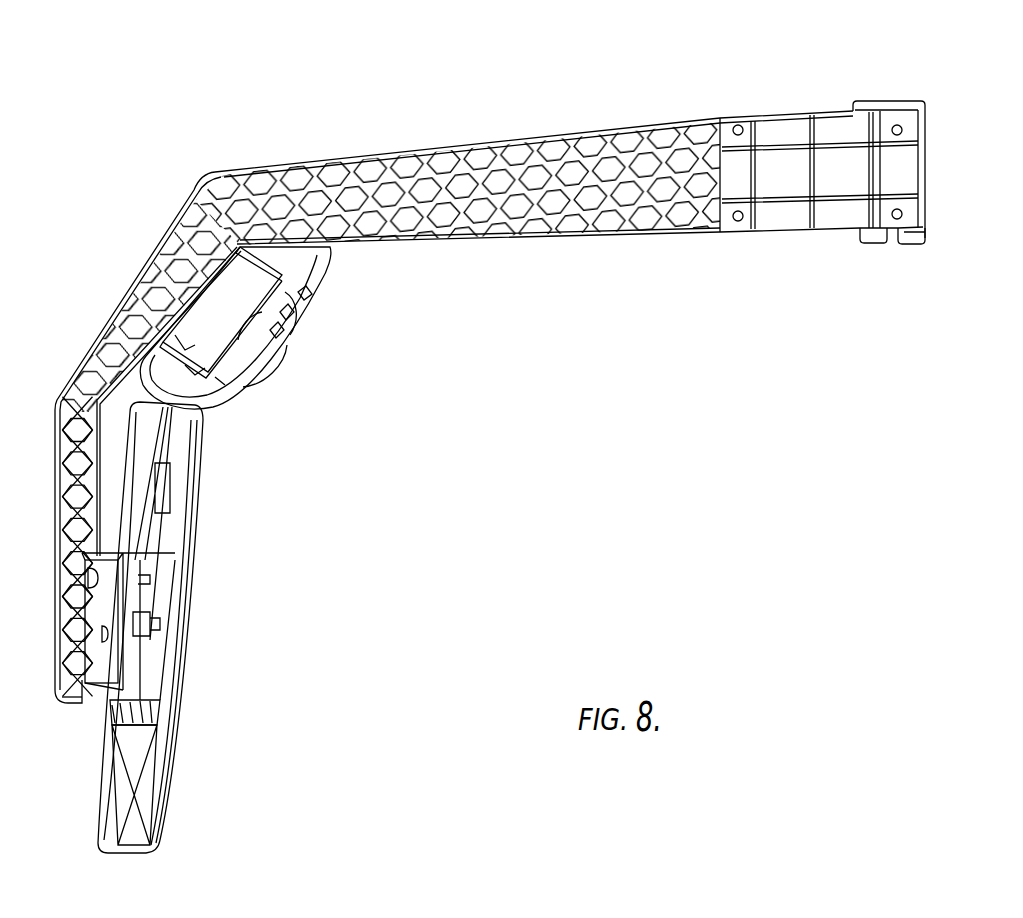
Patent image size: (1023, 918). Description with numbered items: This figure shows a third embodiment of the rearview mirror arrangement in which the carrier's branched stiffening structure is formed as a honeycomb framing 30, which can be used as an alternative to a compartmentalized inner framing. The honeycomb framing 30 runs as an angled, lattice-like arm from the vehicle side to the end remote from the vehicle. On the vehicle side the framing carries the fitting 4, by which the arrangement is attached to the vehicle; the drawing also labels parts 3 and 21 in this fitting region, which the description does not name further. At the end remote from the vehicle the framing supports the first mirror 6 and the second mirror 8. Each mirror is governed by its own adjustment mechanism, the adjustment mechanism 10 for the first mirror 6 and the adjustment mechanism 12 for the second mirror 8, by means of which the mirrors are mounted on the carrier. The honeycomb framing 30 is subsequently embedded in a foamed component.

The mounting tab 3 is at (918, 244).
The fitting 4 is at (855, 237).
The first mirror 6 is at (197, 508).
The second mirror 8 is at (318, 284).
The adjustment mechanism 10 is at (147, 683).
The adjustment mechanism 12 is at (221, 312).
The mounting holes 21 is at (741, 125).
The honeycomb framing 30 is at (521, 216).